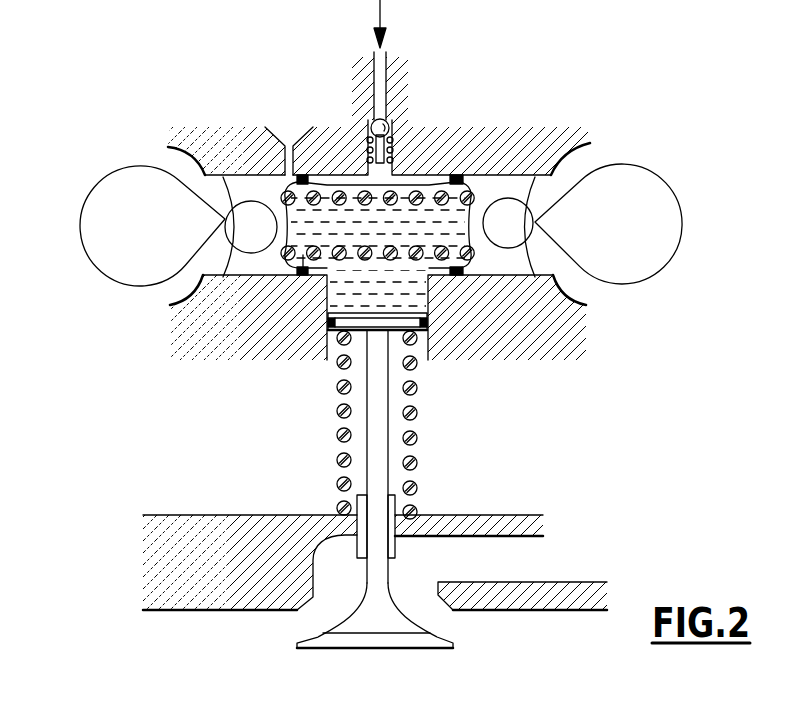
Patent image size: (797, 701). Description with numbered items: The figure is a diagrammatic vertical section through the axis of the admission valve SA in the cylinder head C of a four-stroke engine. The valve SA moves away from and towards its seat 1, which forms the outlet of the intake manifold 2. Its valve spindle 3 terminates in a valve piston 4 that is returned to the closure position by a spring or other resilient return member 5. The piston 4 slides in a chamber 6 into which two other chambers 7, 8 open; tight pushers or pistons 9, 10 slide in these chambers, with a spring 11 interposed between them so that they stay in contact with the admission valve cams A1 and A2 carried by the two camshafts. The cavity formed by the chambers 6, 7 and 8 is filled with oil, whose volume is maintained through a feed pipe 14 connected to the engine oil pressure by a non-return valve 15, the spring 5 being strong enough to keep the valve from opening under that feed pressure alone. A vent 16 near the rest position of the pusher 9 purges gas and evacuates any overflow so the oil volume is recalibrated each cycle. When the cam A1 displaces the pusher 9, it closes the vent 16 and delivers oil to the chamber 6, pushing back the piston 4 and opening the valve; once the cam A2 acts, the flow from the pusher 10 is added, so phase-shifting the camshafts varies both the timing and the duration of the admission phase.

The seat 1 is at (317, 613).
The intake manifold 2 is at (482, 558).
The valve spindle 3 is at (367, 420).
The valve piston 4 is at (394, 323).
The resilient return member 5 is at (338, 483).
The chamber 6 is at (413, 293).
The chamber 7 is at (296, 282).
The chamber 8 is at (452, 212).
The pusher 9 is at (225, 278).
The pusher 10 is at (513, 176).
The spring 11 is at (398, 183).
The feed pipe 14 is at (375, 88).
The non-return valve 15 is at (390, 120).
The vent 16 is at (285, 153).
The admission valve cam A1 is at (127, 176).
The admission valve cam A2 is at (633, 176).
The cylinder head C is at (243, 517).
The admission valve SA is at (420, 648).